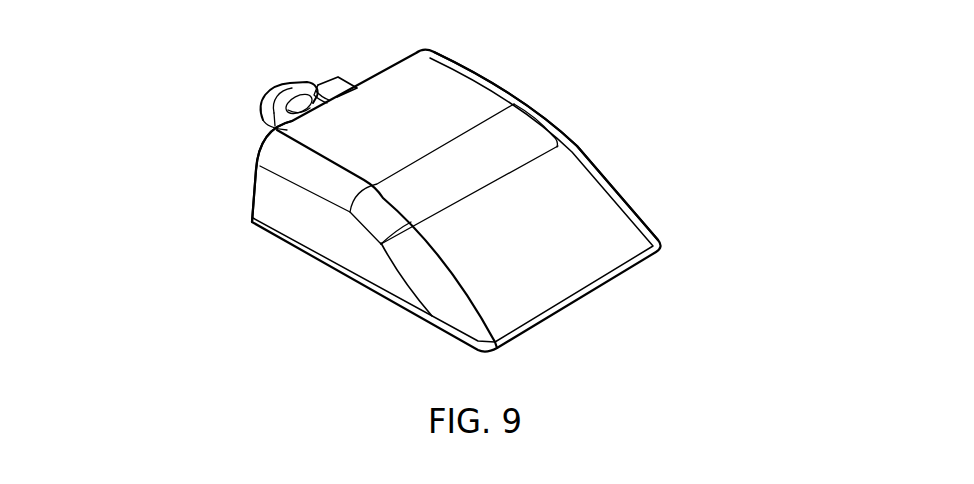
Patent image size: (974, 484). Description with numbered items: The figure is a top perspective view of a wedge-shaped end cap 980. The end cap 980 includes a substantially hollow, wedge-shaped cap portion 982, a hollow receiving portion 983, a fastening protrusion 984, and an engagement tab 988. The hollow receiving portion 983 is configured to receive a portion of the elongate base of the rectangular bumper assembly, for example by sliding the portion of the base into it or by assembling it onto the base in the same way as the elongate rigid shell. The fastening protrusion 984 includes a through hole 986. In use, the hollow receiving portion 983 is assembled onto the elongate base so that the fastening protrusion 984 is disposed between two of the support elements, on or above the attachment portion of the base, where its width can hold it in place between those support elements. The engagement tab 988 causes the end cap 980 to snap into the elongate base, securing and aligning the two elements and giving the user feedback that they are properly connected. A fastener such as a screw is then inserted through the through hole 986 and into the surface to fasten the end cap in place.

The wedge-shaped end cap 980 is at (521, 183).
The wedge-shaped cap portion 982 is at (641, 218).
The hollow receiving portion 983 is at (255, 188).
The fastening protrusion 984 is at (209, 85).
The through hole 986 is at (298, 106).
The engagement tab 988 is at (338, 75).